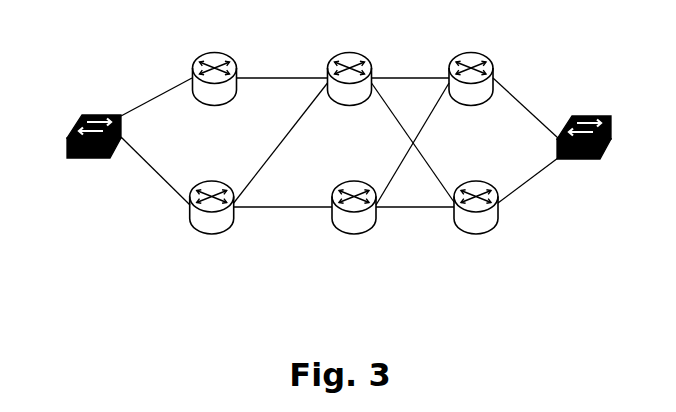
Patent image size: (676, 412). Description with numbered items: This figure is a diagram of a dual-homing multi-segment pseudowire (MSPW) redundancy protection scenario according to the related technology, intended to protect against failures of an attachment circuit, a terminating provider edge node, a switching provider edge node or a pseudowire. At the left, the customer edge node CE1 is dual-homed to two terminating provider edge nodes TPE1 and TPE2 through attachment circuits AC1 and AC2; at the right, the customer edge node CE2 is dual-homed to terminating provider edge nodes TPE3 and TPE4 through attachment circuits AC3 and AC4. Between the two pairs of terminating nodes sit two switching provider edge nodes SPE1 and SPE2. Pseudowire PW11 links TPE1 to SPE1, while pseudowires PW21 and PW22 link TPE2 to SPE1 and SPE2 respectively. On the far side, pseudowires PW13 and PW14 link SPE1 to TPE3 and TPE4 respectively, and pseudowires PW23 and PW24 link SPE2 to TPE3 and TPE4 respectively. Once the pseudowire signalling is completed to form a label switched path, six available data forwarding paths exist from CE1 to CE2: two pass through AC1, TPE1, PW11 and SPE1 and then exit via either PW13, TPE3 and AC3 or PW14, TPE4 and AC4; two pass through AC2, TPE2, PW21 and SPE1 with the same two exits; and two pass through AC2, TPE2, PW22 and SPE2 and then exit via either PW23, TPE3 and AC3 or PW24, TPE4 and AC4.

The customer edge node CE1 is at (76, 136).
The customer edge node CE2 is at (601, 137).
The terminating provider edge node TPE1 is at (215, 66).
The terminating provider edge node TPE2 is at (212, 218).
The terminating provider edge node TPE3 is at (471, 66).
The terminating provider edge node TPE4 is at (476, 218).
The switching provider edge node SPE1 is at (350, 66).
The switching provider edge node SPE2 is at (354, 218).
The attachment circuit AC1 is at (156, 96).
The attachment circuit AC2 is at (155, 171).
The attachment circuit AC3 is at (525, 108).
The attachment circuit AC4 is at (528, 180).
The pseudowire PW11 is at (282, 70).
The pseudowire PW13 is at (411, 70).
The pseudowire PW14 is at (404, 142).
The pseudowire PW21 is at (276, 143).
The pseudowire PW22 is at (283, 216).
The pseudowire PW23 is at (404, 144).
The pseudowire PW24 is at (415, 216).